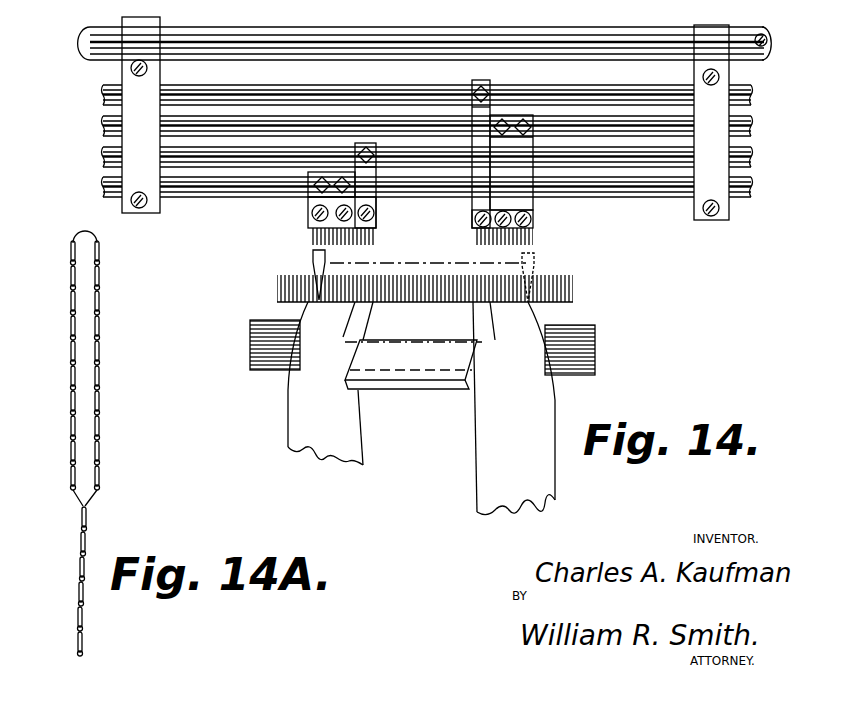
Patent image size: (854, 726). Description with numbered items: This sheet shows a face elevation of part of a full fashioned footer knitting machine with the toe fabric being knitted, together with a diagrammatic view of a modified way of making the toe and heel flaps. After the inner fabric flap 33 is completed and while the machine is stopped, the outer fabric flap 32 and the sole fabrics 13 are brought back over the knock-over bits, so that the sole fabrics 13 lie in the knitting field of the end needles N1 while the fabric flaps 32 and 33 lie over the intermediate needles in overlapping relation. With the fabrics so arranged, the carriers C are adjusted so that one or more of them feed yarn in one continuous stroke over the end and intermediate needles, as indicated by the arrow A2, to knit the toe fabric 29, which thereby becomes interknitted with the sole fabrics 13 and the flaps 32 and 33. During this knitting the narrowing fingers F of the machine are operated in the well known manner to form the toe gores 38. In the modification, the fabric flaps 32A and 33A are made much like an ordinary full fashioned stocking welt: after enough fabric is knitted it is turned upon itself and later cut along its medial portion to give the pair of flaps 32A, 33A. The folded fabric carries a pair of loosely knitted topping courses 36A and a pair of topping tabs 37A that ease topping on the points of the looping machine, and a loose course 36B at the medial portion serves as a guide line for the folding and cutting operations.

In FIG. 14, the narrowing fingers F is at (495, 194).
In FIG. 14, the end needles N1 is at (283, 290).
In FIG. 14, the arrow A2 is at (430, 251).
In FIG. 14, the carriers C is at (318, 266).
In FIG. 14, the sole fabrics 13 is at (478, 434).
In FIG. 14, the toe gores 38 is at (365, 318).
In FIG. 14, the inner fabric flap 33 is at (360, 360).
In FIG. 14, the outer fabric flap 32 is at (470, 370).
In FIG. 14, the toe fabric 29 is at (445, 344).
In FIG. 14A, the loose course 36B is at (99, 244).
In FIG. 14A, the loosely knitted topping courses 36A is at (98, 352).
In FIG. 14A, the topping tabs 37A is at (72, 267).
In FIG. 14A, the fabric flap 32A is at (97, 444).
In FIG. 14A, the fabric flap 33A is at (73, 487).